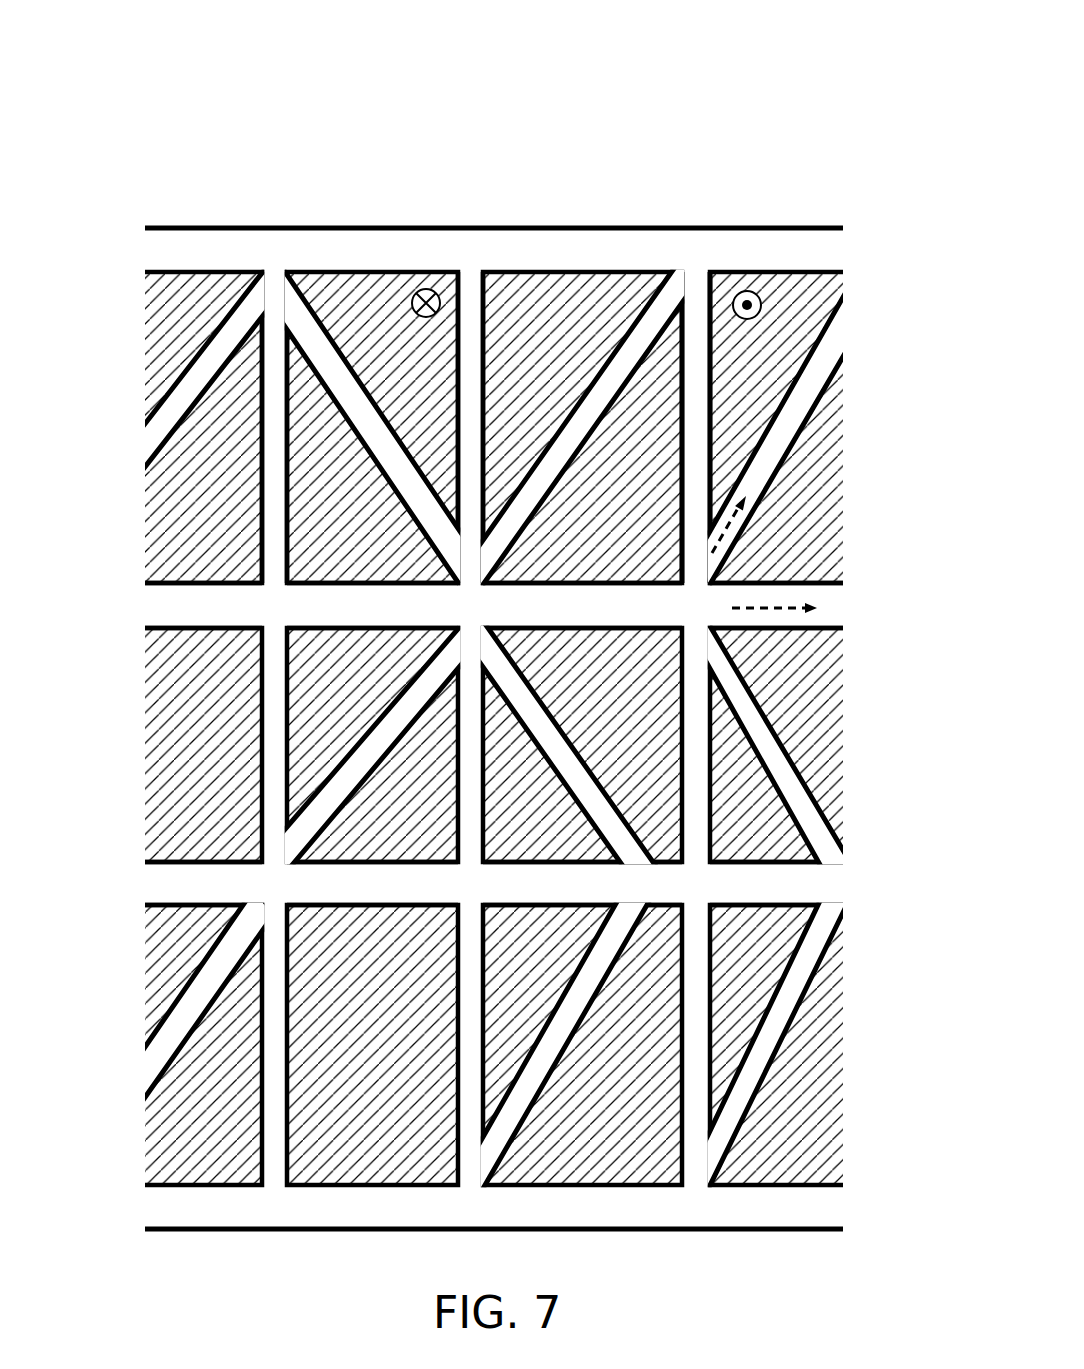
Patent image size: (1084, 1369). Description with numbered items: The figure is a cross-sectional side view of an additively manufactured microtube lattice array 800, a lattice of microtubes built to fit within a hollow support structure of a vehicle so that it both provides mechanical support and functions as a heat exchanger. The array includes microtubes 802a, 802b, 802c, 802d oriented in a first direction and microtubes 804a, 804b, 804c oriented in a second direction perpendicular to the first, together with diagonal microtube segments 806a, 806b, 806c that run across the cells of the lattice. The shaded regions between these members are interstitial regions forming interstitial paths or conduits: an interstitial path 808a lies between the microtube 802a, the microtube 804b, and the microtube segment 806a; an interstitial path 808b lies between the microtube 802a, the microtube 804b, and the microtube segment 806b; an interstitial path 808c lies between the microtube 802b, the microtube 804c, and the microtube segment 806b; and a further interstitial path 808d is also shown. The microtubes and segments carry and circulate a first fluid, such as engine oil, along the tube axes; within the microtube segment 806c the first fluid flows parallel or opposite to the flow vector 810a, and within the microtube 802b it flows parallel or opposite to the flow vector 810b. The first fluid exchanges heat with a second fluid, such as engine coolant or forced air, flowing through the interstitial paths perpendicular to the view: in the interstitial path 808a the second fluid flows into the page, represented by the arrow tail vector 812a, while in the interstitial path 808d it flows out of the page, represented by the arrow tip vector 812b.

The additively manufactured microtube lattice array 800 is at (240, 78).
The microtube 802a is at (188, 248).
The microtube 802b is at (162, 607).
The microtube 802c is at (177, 883).
The microtube 802d is at (175, 1205).
The microtube 804a is at (276, 353).
The microtube 804b is at (470, 302).
The microtube 804c is at (673, 397).
The microtube segment 806a is at (330, 362).
The microtube segment 806b is at (637, 353).
The microtube segment 806c is at (833, 343).
The interstitial path 808a is at (370, 302).
The interstitial path 808b is at (523, 337).
The interstitial path 808c is at (697, 335).
The interstitial path 808d is at (780, 310).
The flow vector 810a is at (723, 538).
The flow vector 810b is at (783, 613).
The arrow tail vector 812a is at (427, 289).
The arrow tip vector 812b is at (745, 289).